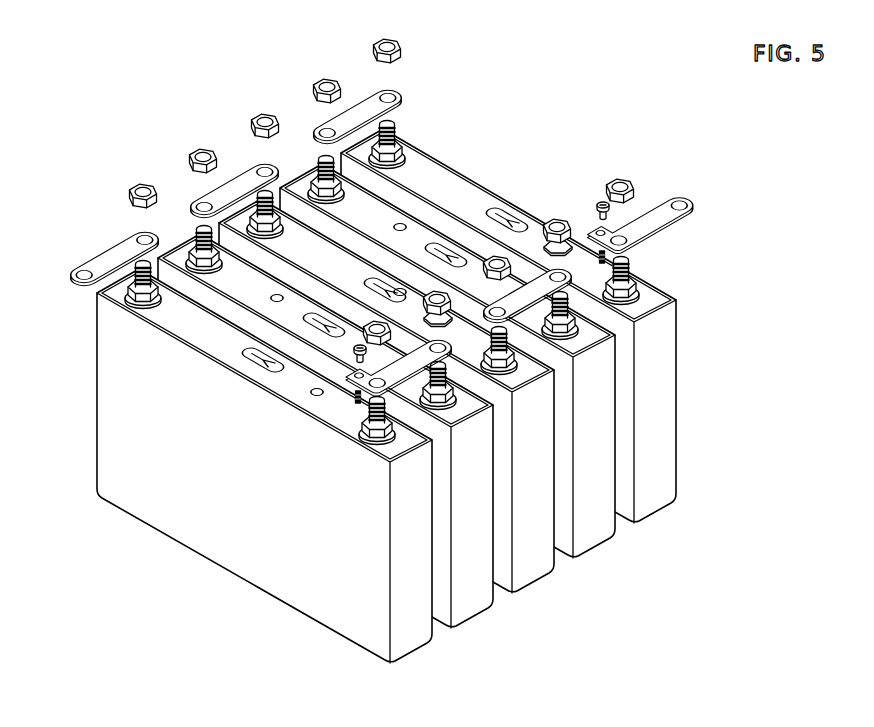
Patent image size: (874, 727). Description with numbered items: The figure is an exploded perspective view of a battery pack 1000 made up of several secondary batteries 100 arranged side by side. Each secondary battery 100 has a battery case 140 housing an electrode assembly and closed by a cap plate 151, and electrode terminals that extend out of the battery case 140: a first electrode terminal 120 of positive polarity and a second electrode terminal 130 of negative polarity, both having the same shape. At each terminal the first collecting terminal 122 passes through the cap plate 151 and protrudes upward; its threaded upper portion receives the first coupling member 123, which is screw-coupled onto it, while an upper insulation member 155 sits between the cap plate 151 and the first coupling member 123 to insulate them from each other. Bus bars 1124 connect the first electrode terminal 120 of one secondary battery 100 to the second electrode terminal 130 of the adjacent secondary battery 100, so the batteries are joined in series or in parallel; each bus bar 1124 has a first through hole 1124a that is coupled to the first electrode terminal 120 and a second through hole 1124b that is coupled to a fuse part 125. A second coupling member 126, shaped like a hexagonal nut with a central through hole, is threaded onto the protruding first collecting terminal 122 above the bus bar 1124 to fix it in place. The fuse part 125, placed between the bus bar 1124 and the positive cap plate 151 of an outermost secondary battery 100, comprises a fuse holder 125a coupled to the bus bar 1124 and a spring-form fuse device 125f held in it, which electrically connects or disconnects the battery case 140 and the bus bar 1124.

The battery pack 1000 is at (402, 346).
The secondary battery 100 is at (215, 548).
The first electrode terminal 120 is at (372, 432).
The second electrode terminal 130 is at (137, 300).
The battery case 140 is at (530, 326).
The cap plate 151 is at (654, 300).
The first collecting terminal 122 is at (629, 257).
The first coupling member 123 is at (636, 269).
The upper insulation member 155 is at (640, 285).
The bus bar 1124 is at (664, 208).
The first through hole 1124a is at (633, 232).
The second through hole 1124b is at (608, 230).
The fuse part 125 is at (559, 204).
The fuse holder 125a is at (600, 200).
The fuse device 125f is at (602, 250).
The second coupling member 126 is at (622, 178).